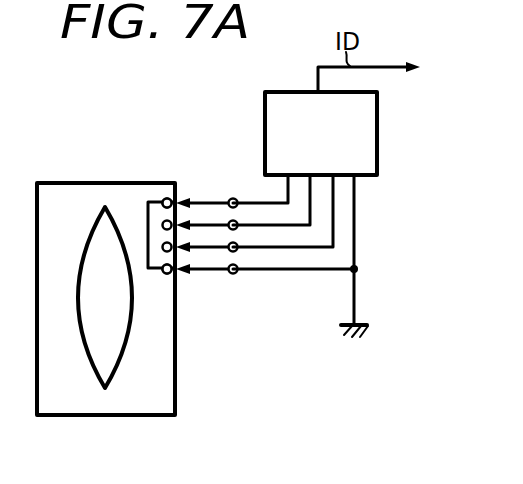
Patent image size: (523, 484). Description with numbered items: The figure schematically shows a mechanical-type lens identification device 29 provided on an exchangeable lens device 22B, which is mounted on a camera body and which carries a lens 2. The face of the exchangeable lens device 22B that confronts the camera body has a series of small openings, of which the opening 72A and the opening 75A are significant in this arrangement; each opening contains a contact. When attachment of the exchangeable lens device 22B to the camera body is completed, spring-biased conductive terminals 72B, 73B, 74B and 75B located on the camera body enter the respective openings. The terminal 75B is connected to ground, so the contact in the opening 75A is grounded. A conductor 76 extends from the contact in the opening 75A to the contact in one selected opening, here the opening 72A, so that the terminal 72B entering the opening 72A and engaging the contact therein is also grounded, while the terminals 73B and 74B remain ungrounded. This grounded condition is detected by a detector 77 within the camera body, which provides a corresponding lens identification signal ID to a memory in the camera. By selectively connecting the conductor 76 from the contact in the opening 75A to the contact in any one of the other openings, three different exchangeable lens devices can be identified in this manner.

The lens 2 is at (125, 355).
The exchangeable lens device 22B is at (101, 426).
The lens identification device 29 is at (176, 165).
The opening 72A is at (166, 199).
The conductive terminal 72B is at (203, 201).
The conductive terminal 73B is at (215, 203).
The conductive terminal 74B is at (202, 248).
The opening 75A is at (166, 274).
The conductive terminal 75B is at (218, 271).
The conductor 76 is at (148, 232).
The detector 77 is at (377, 137).